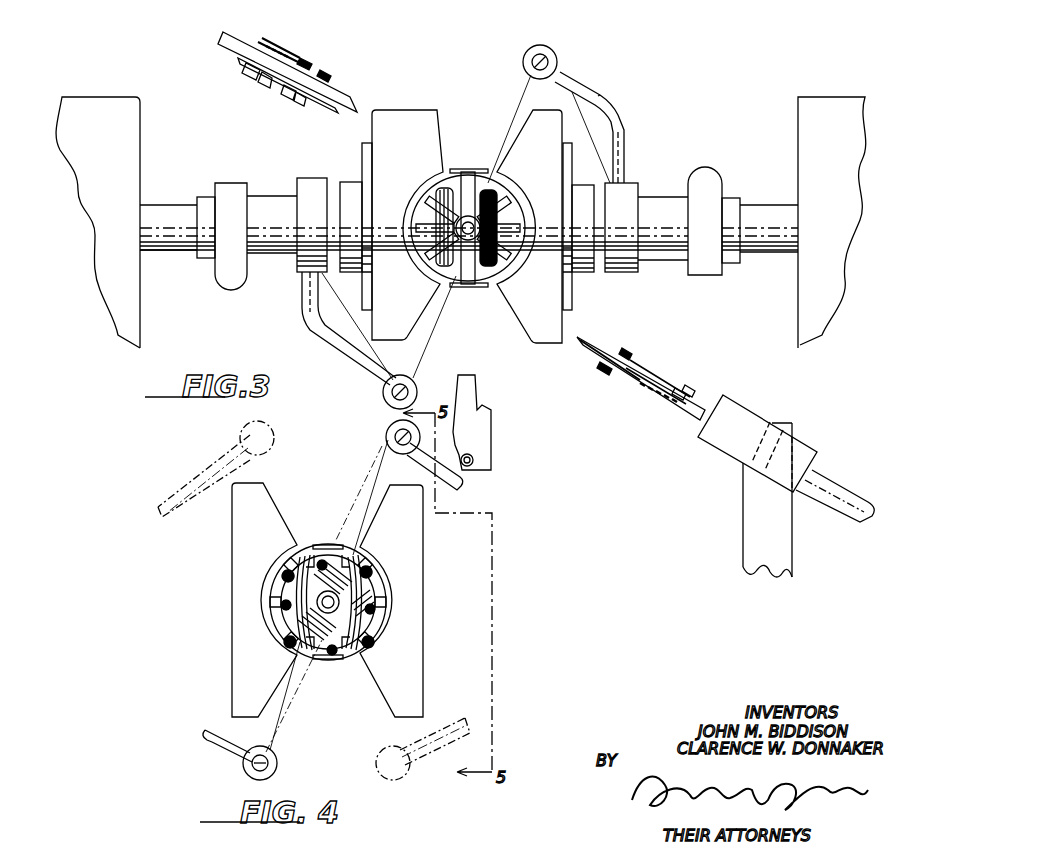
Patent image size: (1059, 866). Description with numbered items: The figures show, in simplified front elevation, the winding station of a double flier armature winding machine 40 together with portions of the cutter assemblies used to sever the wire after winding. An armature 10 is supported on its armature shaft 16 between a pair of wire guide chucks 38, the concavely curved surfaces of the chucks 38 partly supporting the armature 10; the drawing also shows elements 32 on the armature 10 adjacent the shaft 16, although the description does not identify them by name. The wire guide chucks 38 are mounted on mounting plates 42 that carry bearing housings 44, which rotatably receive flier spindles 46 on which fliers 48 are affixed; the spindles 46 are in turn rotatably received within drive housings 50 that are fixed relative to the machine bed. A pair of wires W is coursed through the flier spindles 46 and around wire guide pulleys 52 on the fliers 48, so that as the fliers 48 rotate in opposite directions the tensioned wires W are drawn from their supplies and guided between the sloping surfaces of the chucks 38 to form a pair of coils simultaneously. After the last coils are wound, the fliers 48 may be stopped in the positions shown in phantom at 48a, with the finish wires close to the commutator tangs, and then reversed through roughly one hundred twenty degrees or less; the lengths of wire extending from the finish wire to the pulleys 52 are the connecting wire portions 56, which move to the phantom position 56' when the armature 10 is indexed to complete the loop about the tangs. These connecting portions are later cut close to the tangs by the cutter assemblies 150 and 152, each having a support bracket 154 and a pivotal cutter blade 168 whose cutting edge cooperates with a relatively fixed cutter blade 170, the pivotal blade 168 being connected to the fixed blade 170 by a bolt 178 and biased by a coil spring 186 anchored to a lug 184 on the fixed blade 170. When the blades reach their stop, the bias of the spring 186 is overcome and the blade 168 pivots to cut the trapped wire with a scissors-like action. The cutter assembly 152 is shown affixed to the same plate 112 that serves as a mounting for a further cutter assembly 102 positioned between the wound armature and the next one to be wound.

In FIG. 3, the armature 10 is at (466, 155).
In FIG. 4, the armature 10 is at (315, 526).
In FIG. 3, the armature shaft 16 is at (462, 278).
In FIG. 3, the rollers 32 is at (414, 198).
In FIG. 3, the wire guide chucks 38 is at (398, 118).
In FIG. 4, the wire guide chucks 38 is at (240, 610).
In FIG. 3, the double flier armature winding machine 40 is at (606, 85).
In FIG. 3, the mounting plates 42 is at (367, 144).
In FIG. 3, the bearing housings 44 is at (357, 186).
In FIG. 3, the flier spindles 46 is at (163, 210).
In FIG. 3, the fliers 48 is at (622, 136).
In FIG. 4, the fliers 48 is at (456, 490).
In FIG. 4, the phantom line positions of fliers 48a is at (178, 508).
In FIG. 3, the drive housings 50 is at (122, 128).
In FIG. 3, the wire guide pulleys 52 is at (558, 60).
In FIG. 4, the wire guide pulleys 52 is at (386, 437).
In FIG. 4, the connecting wire portions 56 is at (333, 595).
In FIG. 4, the phantom line position of connecting wire portions 56' is at (324, 599).
In FIG. 3, the wires W is at (512, 100).
In FIG. 4, the cutter assembly 102 is at (500, 411).
In FIG. 3, the plate 112 is at (745, 535).
In FIG. 3, the cutter assembly 150 is at (449, 213).
In FIG. 3, the cutter assembly 152 is at (710, 457).
In FIG. 3, the support bracket 154 is at (765, 428).
In FIG. 3, the pivotal cutter blade 168 is at (593, 346).
In FIG. 3, the fixed cutter blade 170 is at (658, 373).
In FIG. 3, the bolt 178 is at (322, 73).
In FIG. 3, the lug 184 is at (246, 78).
In FIG. 3, the coil spring 186 is at (282, 50).